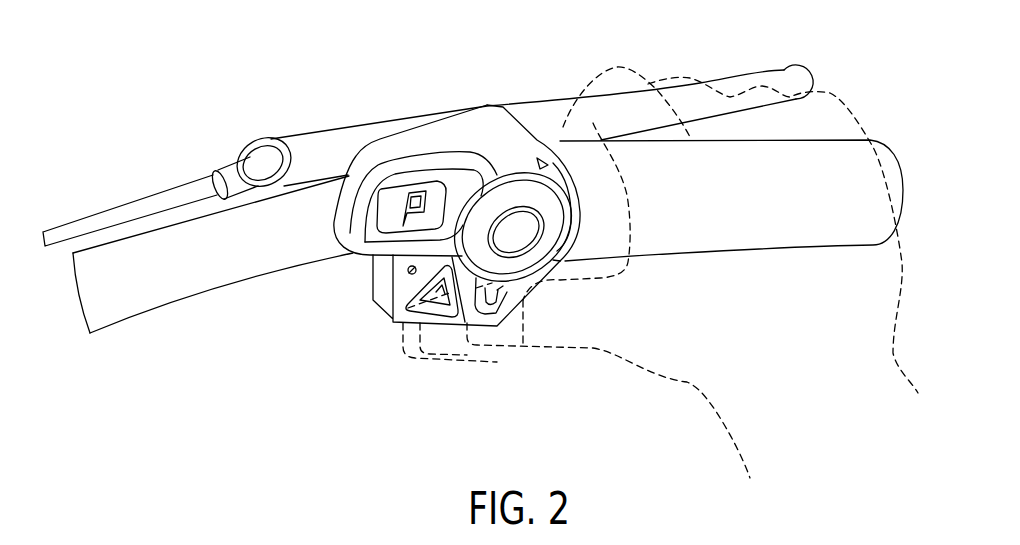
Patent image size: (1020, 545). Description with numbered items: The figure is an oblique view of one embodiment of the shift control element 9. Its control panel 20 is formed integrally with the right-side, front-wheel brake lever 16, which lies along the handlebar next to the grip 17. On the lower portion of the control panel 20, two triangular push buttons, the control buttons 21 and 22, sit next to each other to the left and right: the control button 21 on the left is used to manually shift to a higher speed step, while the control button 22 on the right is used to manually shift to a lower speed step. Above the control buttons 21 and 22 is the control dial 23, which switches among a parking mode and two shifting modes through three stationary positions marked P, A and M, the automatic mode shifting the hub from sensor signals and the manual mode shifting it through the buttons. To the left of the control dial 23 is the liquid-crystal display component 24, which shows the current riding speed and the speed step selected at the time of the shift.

The shift control element 9 is at (463, 212).
The right-side brake lever 16 is at (348, 139).
The grip 17 is at (880, 140).
The control panel 20 is at (460, 127).
The control button 21 is at (430, 288).
The control button 22 is at (483, 292).
The control dial 23 is at (520, 183).
The liquid-crystal display component 24 is at (403, 195).